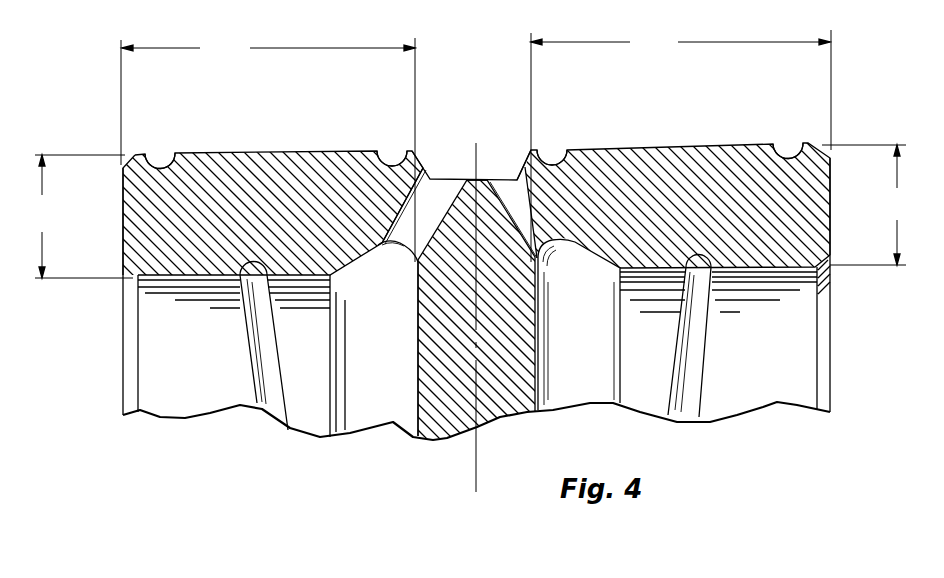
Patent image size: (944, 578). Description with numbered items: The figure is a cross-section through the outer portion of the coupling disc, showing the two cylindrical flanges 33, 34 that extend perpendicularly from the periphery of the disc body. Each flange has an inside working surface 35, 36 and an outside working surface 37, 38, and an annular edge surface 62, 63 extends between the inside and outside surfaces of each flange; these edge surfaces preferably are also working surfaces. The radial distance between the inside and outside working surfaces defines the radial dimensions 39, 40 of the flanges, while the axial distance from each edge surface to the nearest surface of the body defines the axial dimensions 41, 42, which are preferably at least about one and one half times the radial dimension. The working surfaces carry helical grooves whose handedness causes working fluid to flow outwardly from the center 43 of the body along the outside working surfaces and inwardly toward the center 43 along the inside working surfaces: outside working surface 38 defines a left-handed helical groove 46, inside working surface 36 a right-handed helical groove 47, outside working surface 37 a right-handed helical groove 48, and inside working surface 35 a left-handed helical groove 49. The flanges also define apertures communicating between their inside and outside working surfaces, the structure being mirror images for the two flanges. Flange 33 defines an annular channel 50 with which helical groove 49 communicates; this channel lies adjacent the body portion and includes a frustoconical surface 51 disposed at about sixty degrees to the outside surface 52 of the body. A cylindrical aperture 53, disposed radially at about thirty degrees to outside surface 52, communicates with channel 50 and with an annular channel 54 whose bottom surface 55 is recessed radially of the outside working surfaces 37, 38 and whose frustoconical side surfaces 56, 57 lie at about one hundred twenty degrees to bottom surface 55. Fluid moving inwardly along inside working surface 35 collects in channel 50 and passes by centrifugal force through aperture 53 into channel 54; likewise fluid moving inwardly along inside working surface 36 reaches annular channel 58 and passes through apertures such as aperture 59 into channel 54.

The cylindrical flange 33 is at (177, 265).
The cylindrical flange 34 is at (773, 248).
The inside working surface 35 is at (330, 342).
The inside working surface 36 is at (650, 272).
The outside working surface 37 is at (282, 154).
The outside working surface 38 is at (662, 145).
The radial dimension 39 is at (80, 216).
The radial dimension 40 is at (867, 205).
The axial dimension 41 is at (268, 150).
The axial dimension 42 is at (681, 146).
The center 43 is at (475, 471).
The left-handed helical groove 46 is at (787, 156).
The right-handed helical groove 47 is at (703, 262).
The right-handed helical groove 48 is at (160, 166).
The left-handed helical groove 49 is at (243, 298).
The annular channel 50 is at (397, 268).
The frustoconical surface 51 is at (375, 258).
The outside surface 52 is at (418, 402).
The cylindrical aperture 53 is at (405, 210).
The annular channel 54 is at (457, 166).
The bottom surface 55 is at (482, 179).
The frustoconical side surface 56 is at (421, 163).
The frustoconical side surface 57 is at (523, 162).
The annular channel 58 is at (565, 262).
The aperture 59 is at (540, 202).
The annular edge surface 62 is at (122, 222).
The annular edge surface 63 is at (830, 207).